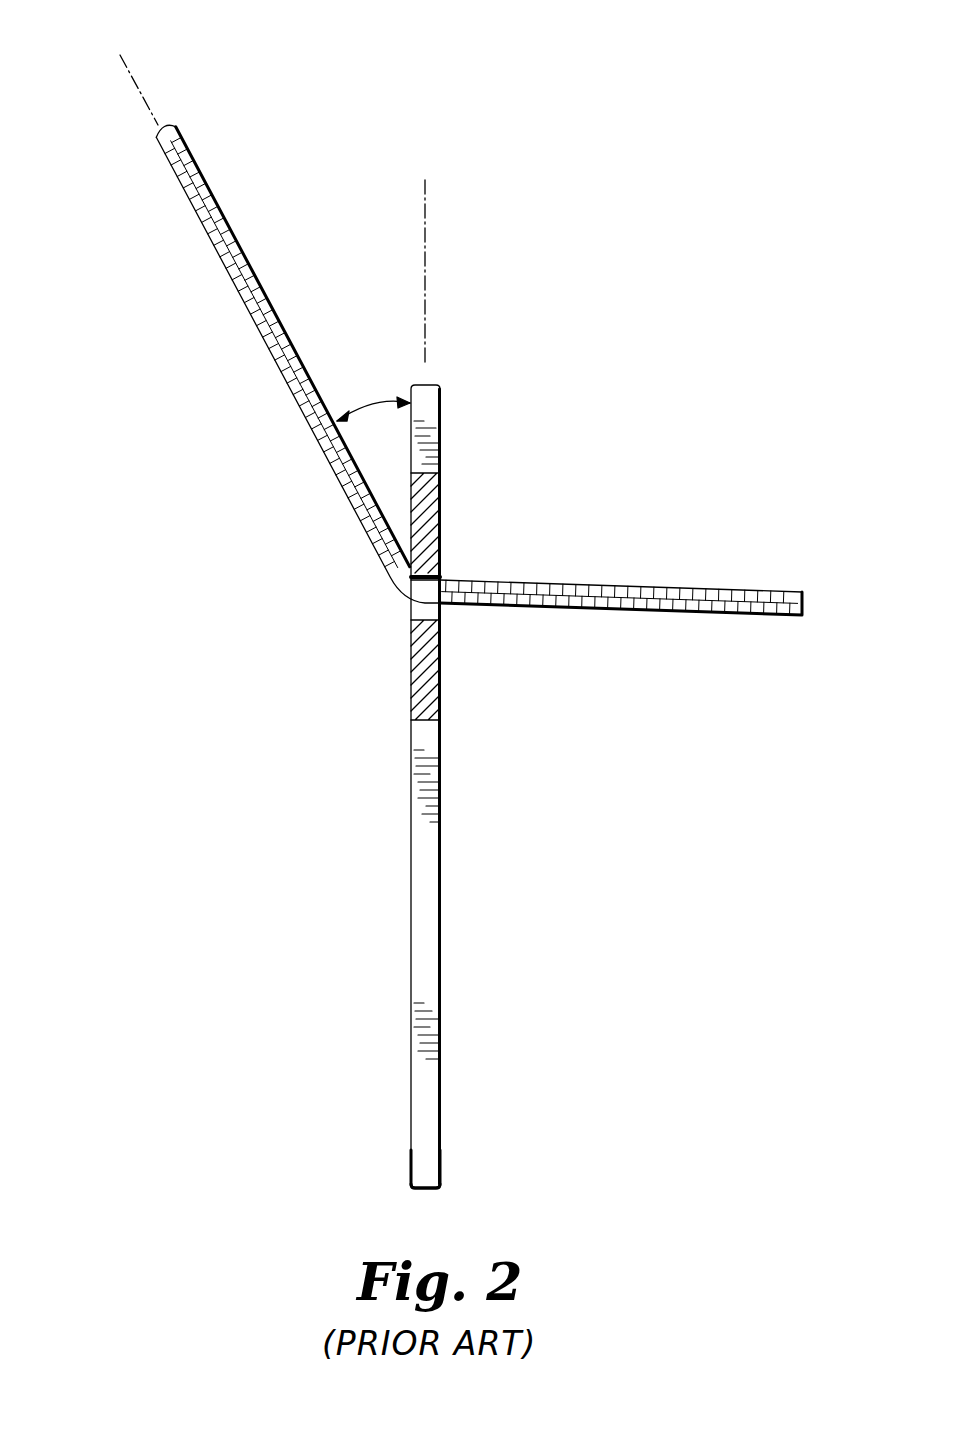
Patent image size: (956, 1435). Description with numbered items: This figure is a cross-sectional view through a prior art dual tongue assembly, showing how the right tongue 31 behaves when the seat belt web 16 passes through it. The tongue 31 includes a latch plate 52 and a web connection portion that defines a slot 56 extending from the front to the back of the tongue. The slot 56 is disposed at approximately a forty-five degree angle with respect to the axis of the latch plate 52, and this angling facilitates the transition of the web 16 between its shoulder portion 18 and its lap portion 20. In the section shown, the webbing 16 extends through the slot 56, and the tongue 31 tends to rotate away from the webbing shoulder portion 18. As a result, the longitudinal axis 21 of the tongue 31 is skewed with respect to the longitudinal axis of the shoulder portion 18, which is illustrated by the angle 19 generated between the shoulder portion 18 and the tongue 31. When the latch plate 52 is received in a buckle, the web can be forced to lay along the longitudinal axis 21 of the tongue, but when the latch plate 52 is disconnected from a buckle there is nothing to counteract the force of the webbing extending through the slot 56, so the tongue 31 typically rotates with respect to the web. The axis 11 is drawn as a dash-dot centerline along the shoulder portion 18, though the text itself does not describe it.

The longitudinal axis of angled leg 11 is at (132, 70).
The web 16 is at (333, 477).
The shoulder portion 18 is at (218, 207).
The angle 19 is at (372, 405).
The lap portion 20 is at (648, 588).
The longitudinal axis 21 is at (425, 210).
The right tongue 31 is at (440, 903).
The latch plate 52 is at (442, 1137).
The slot 56 is at (423, 610).